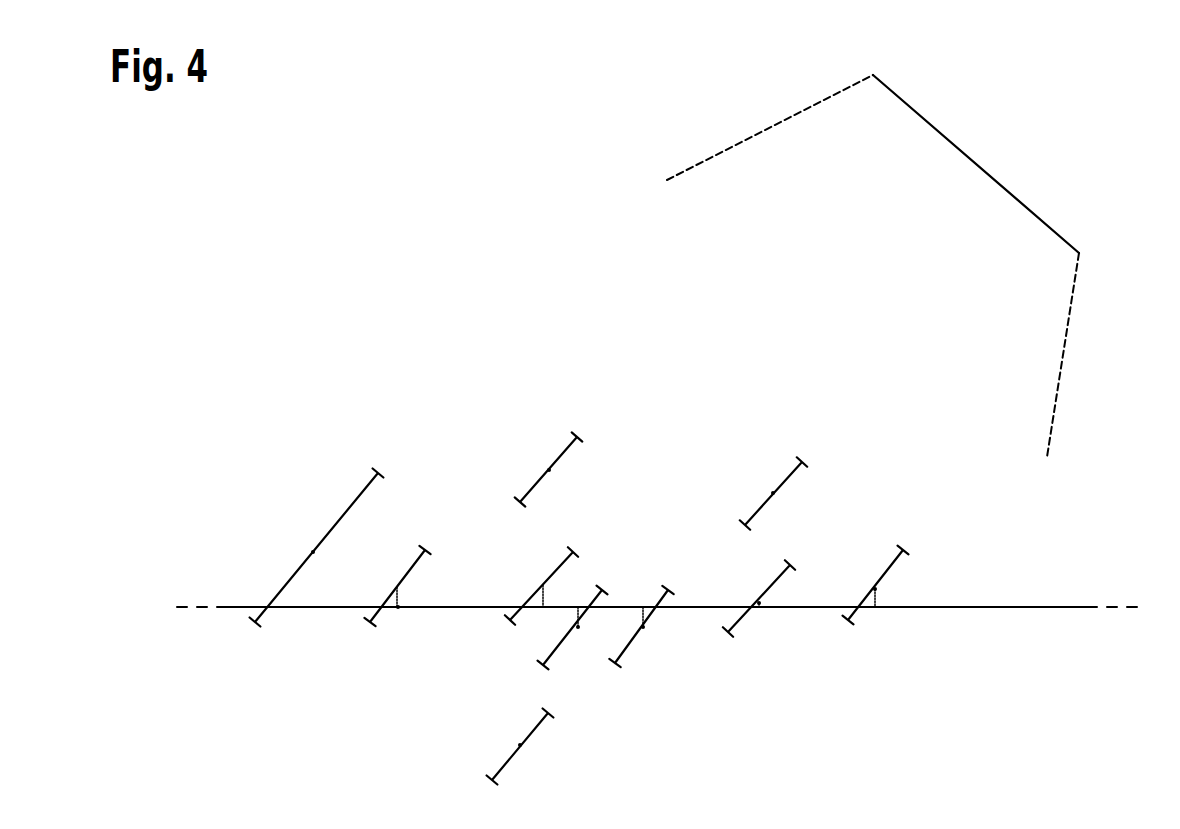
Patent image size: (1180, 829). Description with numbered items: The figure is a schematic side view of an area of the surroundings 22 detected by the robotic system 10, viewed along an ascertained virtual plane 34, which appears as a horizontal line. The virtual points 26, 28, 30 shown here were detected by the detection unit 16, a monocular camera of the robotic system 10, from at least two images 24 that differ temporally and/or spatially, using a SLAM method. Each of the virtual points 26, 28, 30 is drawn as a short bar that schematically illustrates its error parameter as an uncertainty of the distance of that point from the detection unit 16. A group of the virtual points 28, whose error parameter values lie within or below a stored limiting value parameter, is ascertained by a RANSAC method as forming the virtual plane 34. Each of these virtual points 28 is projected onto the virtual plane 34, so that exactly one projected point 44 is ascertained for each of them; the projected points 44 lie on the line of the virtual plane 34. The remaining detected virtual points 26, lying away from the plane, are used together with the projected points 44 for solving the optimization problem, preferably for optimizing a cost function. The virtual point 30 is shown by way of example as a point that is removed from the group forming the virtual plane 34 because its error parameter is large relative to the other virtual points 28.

The robotic system 10 is at (1058, 110).
The detection unit 16 is at (1080, 205).
The images 24 is at (973, 163).
The surroundings 22 is at (657, 758).
The virtual plane 34 is at (990, 607).
The virtual point 30 is at (313, 552).
The virtual points 28 is at (543, 585).
The virtual points 26 is at (773, 493).
The projected point 44 is at (397, 622).